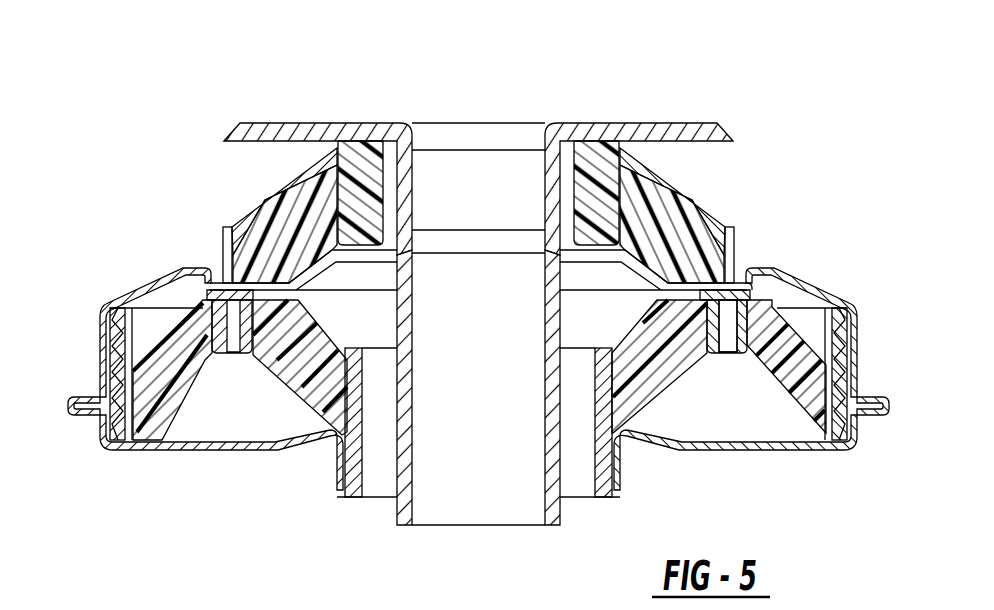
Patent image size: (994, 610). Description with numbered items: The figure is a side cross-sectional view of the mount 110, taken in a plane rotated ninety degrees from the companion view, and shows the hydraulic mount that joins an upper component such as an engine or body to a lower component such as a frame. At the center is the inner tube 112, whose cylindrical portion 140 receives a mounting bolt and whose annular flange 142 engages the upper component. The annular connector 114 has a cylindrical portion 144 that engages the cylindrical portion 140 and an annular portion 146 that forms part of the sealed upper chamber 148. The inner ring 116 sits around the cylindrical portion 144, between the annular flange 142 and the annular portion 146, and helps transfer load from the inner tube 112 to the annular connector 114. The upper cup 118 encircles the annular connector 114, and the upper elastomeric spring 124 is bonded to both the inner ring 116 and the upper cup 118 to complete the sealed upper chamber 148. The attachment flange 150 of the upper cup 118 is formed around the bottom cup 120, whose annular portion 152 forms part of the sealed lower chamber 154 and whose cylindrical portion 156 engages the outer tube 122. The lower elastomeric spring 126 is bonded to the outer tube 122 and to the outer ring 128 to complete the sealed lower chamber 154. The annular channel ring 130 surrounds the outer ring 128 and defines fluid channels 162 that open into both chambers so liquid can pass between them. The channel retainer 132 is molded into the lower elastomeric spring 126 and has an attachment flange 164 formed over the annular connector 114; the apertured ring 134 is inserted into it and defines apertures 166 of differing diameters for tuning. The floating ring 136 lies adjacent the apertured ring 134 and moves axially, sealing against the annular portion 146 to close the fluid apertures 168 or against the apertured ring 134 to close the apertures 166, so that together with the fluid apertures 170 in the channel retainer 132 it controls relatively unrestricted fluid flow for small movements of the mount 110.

The mount 110 is at (287, 90).
The inner tube 112 is at (375, 137).
The annular connector 114 is at (678, 203).
The inner ring 116 is at (602, 158).
The upper cup 118 is at (853, 350).
The bottom cup 120 is at (723, 444).
The outer tube 122 is at (388, 468).
The upper elastomeric spring 124 is at (655, 178).
The lower elastomeric spring 126 is at (190, 352).
The outer ring 128 is at (140, 422).
The annular channel ring 130 is at (853, 433).
The channel retainer 132 is at (770, 280).
The apertured ring 134 is at (777, 311).
The floating ring 136 is at (744, 343).
The cylindrical portion 140 is at (418, 340).
The annular flange 142 is at (597, 135).
The cylindrical portion 144 is at (392, 188).
The annular portion 146 is at (268, 200).
The sealed upper chamber 148 is at (285, 278).
The attachment flange 150 is at (67, 420).
The annular portion 152 is at (217, 444).
The sealed lower chamber 154 is at (197, 418).
The cylindrical portion 156 is at (342, 472).
The fluid channel 162 is at (847, 368).
The attachment flange 164 is at (203, 278).
The aperture 166 is at (741, 322).
The fluid aperture 168 is at (650, 262).
The fluid aperture 170 is at (215, 378).